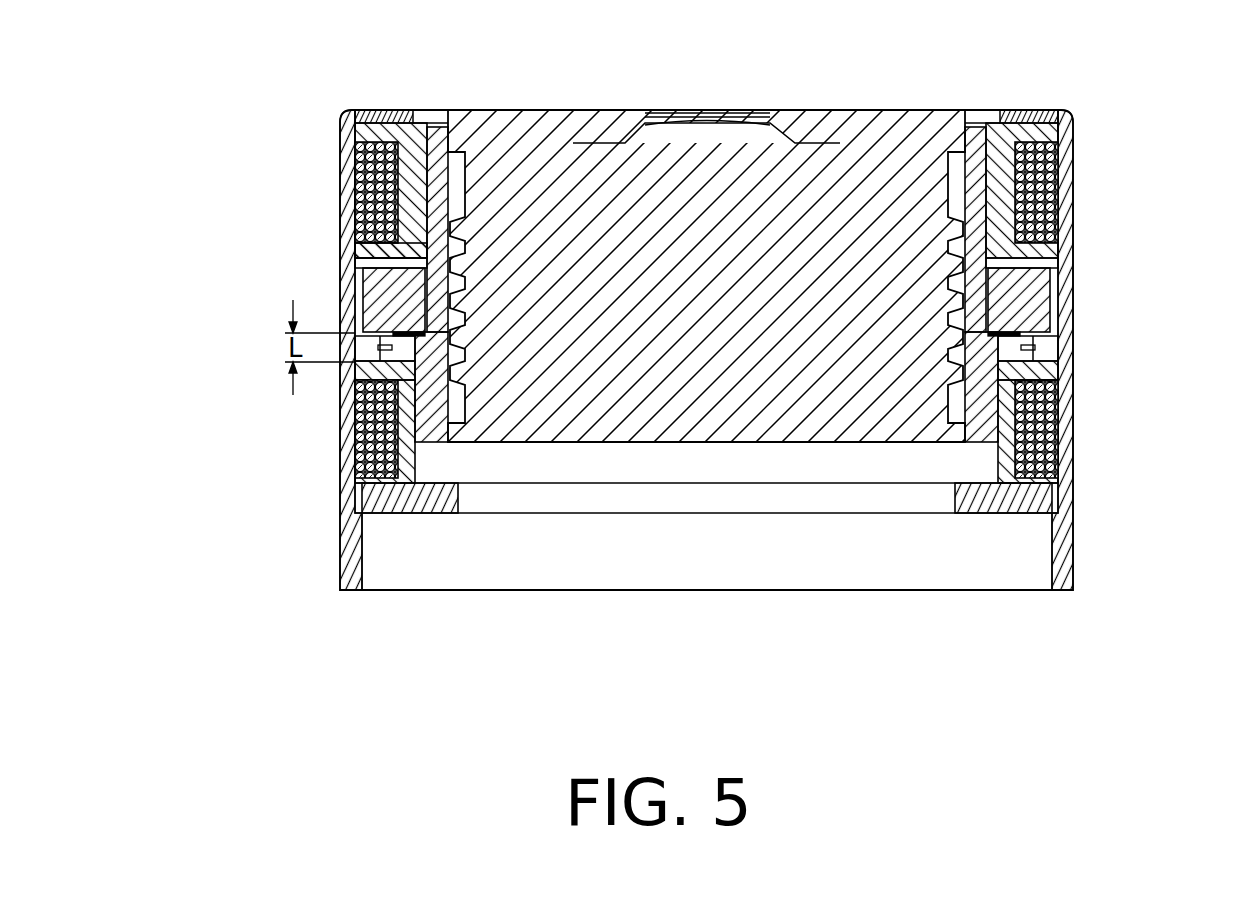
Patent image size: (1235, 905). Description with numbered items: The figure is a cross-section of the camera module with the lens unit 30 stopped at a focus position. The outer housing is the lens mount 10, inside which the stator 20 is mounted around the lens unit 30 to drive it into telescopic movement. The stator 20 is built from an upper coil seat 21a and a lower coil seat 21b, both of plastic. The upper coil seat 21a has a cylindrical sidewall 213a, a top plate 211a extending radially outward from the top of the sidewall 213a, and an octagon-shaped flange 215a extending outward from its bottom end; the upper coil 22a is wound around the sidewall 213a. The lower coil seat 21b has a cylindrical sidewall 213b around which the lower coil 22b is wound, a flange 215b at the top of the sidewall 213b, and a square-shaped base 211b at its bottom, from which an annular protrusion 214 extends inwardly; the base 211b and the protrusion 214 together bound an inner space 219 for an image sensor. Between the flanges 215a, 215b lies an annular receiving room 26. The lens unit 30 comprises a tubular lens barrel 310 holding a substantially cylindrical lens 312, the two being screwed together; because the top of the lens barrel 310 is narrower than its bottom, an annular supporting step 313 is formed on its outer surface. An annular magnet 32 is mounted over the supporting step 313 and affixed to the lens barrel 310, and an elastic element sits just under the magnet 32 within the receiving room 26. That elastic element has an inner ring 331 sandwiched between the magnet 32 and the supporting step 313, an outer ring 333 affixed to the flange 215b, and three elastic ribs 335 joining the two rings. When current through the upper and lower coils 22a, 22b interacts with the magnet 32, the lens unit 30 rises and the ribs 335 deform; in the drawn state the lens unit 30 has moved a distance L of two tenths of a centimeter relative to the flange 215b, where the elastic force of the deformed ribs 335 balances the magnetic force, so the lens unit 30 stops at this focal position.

The lens mount 10 is at (937, 168).
The stator 20 is at (128, 173).
The upper coil seat 21a is at (282, 186).
The top plate 211a is at (350, 141).
The cylindrical sidewall 213a is at (350, 198).
The flange 215a is at (350, 243).
The lower coil seat 21b is at (277, 430).
The base 211b is at (365, 492).
The cylindrical sidewall 213b is at (360, 452).
The flange 215b is at (360, 410).
The upper coil 22a is at (395, 135).
The lower coil 22b is at (388, 487).
The annular receiving room 26 is at (375, 300).
The annular protrusion 214 is at (978, 500).
The inner space 219 is at (638, 540).
The lens unit 30 is at (1091, 303).
The lens barrel 310 is at (990, 205).
The lens 312 is at (963, 157).
The annular supporting step 313 is at (995, 337).
The annular magnet 32 is at (1057, 272).
The inner ring 331 is at (1000, 334).
The outer ring 333 is at (1033, 360).
The elastic ribs 335 is at (1033, 342).